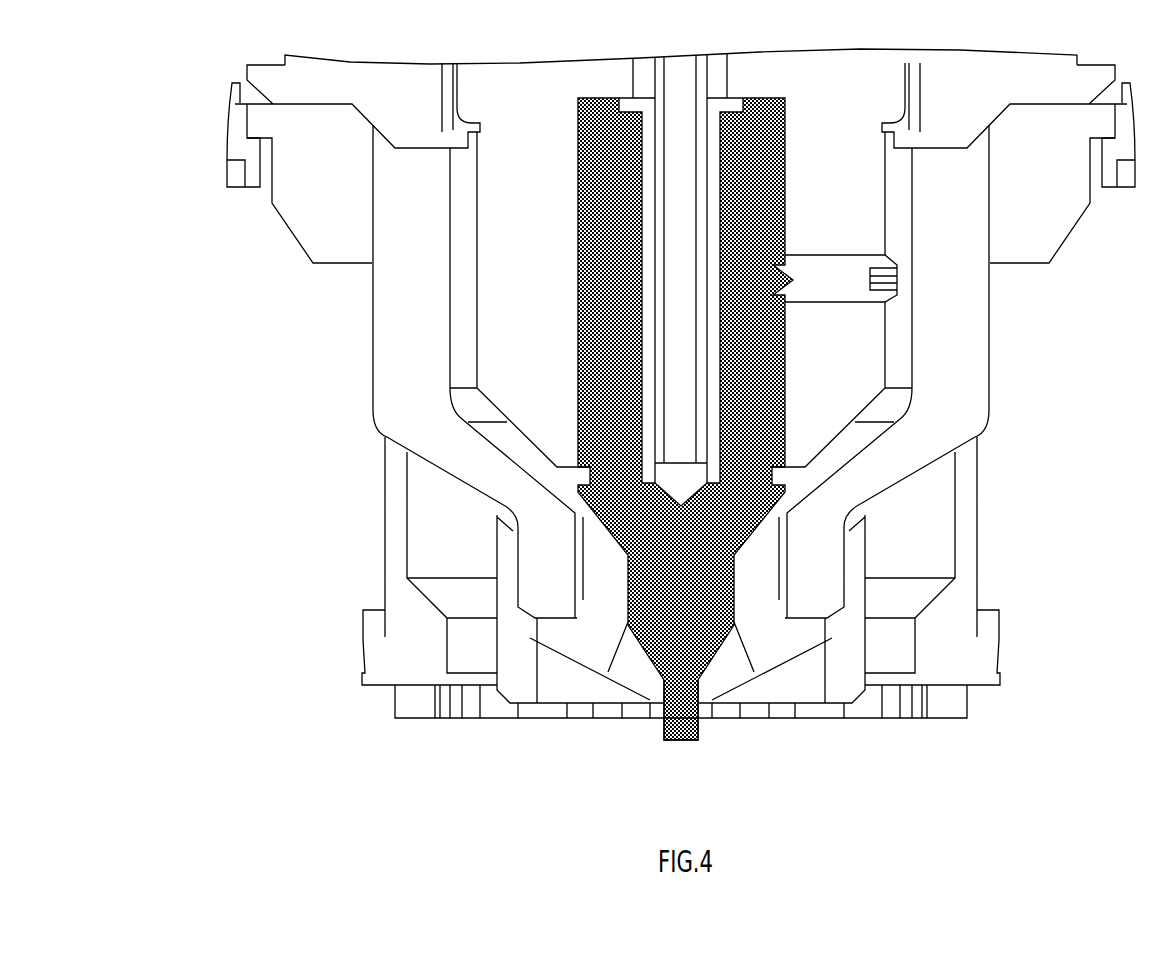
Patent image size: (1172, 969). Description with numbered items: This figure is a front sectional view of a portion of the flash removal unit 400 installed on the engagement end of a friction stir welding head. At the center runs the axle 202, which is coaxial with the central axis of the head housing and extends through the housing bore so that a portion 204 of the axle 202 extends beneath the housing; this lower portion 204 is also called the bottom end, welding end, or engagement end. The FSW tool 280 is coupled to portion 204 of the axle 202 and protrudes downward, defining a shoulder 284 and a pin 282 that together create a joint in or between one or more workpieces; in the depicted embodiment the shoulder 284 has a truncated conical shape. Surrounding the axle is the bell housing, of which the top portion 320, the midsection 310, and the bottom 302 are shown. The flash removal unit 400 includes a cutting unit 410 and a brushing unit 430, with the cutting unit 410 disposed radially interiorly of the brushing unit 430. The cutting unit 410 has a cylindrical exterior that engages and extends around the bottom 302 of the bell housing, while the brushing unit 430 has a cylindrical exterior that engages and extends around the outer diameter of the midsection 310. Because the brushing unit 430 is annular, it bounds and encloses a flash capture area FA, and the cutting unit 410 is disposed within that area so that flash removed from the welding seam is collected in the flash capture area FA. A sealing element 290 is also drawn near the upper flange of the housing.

The axle 202 is at (876, 207).
The engagement end of the axle 204 is at (851, 320).
The FSW tool 280 is at (788, 378).
The pin 282 is at (700, 733).
The shoulder 284 is at (728, 658).
The seal ring 290 is at (238, 95).
The bottom of the bell housing 302 is at (598, 643).
The midsection of the bell housing 310 is at (434, 327).
The top portion of the bell housing 320 is at (392, 102).
The flash removal unit 400 is at (1063, 714).
The cutting unit 410 is at (855, 668).
The brushing unit 430 is at (960, 690).
The flash capture area FA is at (633, 716).